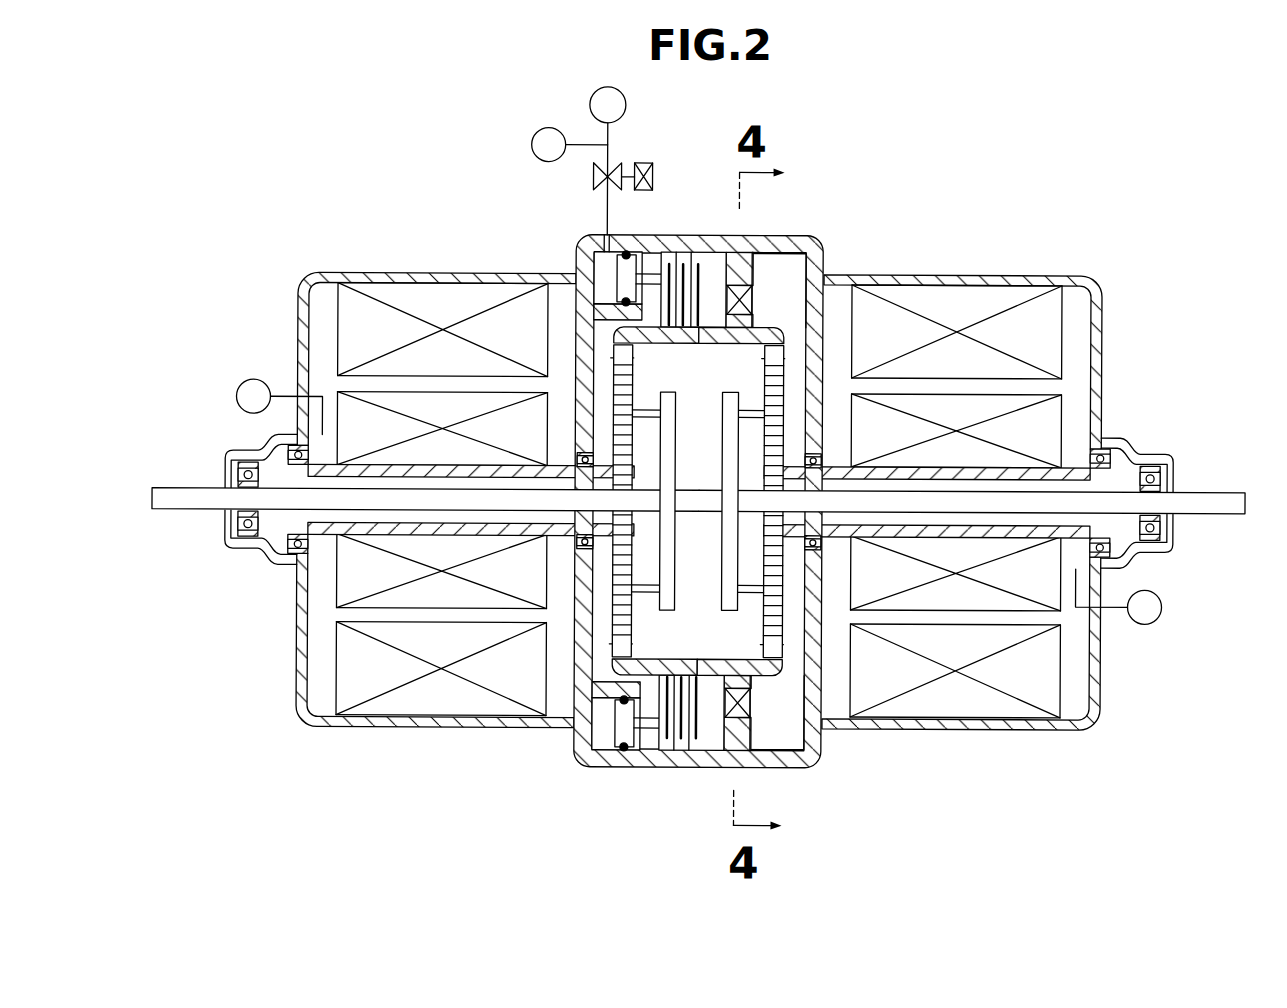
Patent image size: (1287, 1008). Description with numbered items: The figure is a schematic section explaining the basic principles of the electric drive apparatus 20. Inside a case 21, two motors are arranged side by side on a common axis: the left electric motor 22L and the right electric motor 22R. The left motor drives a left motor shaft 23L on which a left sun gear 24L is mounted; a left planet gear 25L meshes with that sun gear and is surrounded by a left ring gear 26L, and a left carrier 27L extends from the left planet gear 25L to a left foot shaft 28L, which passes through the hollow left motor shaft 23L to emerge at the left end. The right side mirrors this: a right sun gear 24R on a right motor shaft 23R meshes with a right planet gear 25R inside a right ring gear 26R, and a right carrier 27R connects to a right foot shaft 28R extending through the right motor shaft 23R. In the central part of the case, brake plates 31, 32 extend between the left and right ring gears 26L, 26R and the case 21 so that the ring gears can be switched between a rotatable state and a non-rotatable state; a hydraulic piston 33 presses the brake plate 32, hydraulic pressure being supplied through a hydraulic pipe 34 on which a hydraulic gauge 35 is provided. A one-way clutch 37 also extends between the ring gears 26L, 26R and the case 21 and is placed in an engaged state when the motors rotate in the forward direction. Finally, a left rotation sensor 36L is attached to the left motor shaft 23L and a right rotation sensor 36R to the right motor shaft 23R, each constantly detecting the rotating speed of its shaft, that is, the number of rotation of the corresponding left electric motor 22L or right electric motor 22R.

The electric drive apparatus 20 is at (1089, 224).
The case 21 is at (390, 272).
The left electric motor 22L is at (382, 734).
The right electric motor 22R is at (966, 733).
The left motor shaft 23L is at (322, 536).
The right motor shaft 23R is at (1070, 465).
The left sun gear 24L is at (583, 547).
The right sun gear 24R is at (810, 458).
The left planet gear 25L is at (612, 594).
The right planet gear 25R is at (784, 395).
The left ring gear 26L is at (612, 642).
The right ring gear 26R is at (784, 362).
The left carrier 27L is at (665, 612).
The right carrier 27R is at (723, 612).
The left foot shaft 28L is at (170, 492).
The right foot shaft 28R is at (1225, 497).
The brake plate 31 is at (702, 282).
The brake plate 32 is at (641, 266).
The hydraulic piston 33 is at (620, 277).
The hydraulic pipe 34 is at (606, 210).
The hydraulic gauge 35 is at (553, 128).
The left rotation sensor 36L is at (253, 381).
The right rotation sensor 36R is at (1148, 622).
The one-way clutch 37 is at (752, 303).